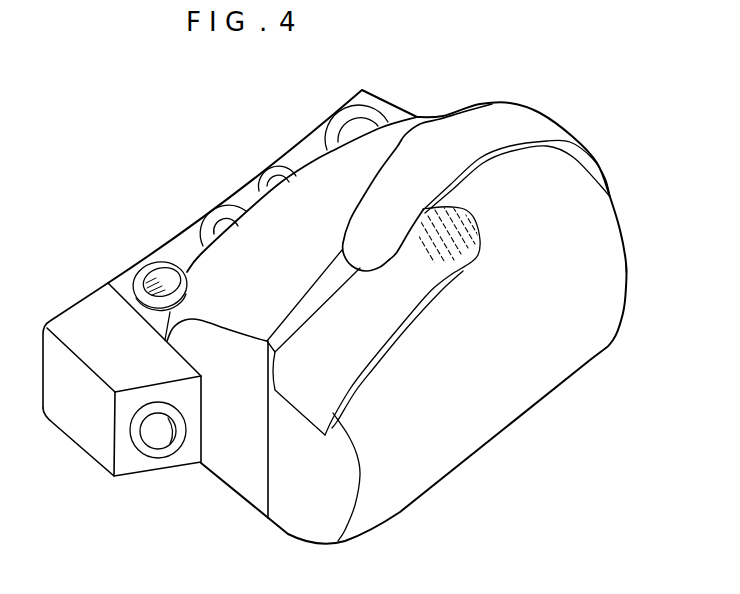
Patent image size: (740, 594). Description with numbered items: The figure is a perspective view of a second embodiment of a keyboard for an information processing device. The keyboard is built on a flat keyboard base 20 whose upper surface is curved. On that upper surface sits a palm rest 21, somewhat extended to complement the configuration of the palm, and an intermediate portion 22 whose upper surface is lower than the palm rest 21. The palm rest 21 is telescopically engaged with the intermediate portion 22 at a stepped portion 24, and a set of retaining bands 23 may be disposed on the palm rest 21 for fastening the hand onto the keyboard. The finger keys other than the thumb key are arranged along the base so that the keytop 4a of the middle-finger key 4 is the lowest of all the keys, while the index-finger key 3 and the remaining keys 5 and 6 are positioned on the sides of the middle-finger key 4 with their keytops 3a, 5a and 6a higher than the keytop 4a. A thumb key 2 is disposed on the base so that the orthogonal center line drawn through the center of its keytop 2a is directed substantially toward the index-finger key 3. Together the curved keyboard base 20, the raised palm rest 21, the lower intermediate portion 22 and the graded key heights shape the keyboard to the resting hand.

The thumb key 2 is at (142, 455).
The keytop 2a is at (163, 450).
The index-finger key 3 is at (143, 266).
The keytop 3a is at (168, 280).
The middle-finger key 4 is at (213, 213).
The keytop 4a is at (230, 225).
The key 5 is at (275, 165).
The keytop 5a is at (288, 163).
The key 6 is at (322, 121).
The keytop 6a is at (360, 128).
The keyboard base 20 is at (562, 390).
The palm rest 21 is at (575, 267).
The intermediate portion 22 is at (412, 132).
The retaining bands 23 is at (430, 270).
The stepped portion 24 is at (263, 457).